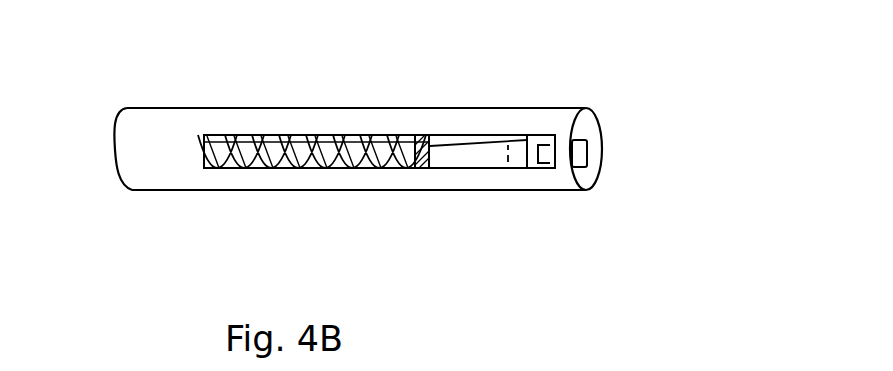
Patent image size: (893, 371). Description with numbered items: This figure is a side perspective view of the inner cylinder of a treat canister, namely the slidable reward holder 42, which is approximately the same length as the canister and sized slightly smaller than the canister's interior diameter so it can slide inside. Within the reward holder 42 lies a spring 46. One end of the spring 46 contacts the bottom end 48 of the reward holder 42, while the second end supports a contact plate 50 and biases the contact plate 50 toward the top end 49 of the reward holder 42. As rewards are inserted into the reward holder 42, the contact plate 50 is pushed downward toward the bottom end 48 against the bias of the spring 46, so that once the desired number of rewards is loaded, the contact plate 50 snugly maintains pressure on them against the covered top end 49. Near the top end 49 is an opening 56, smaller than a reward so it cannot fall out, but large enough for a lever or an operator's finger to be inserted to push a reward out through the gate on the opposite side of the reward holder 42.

The reward holder 42 is at (189, 118).
The spring 46 is at (291, 160).
The bottom end 48 is at (112, 138).
The top end 49 is at (585, 190).
The contact plate 50 is at (437, 137).
The opening 56 is at (586, 155).